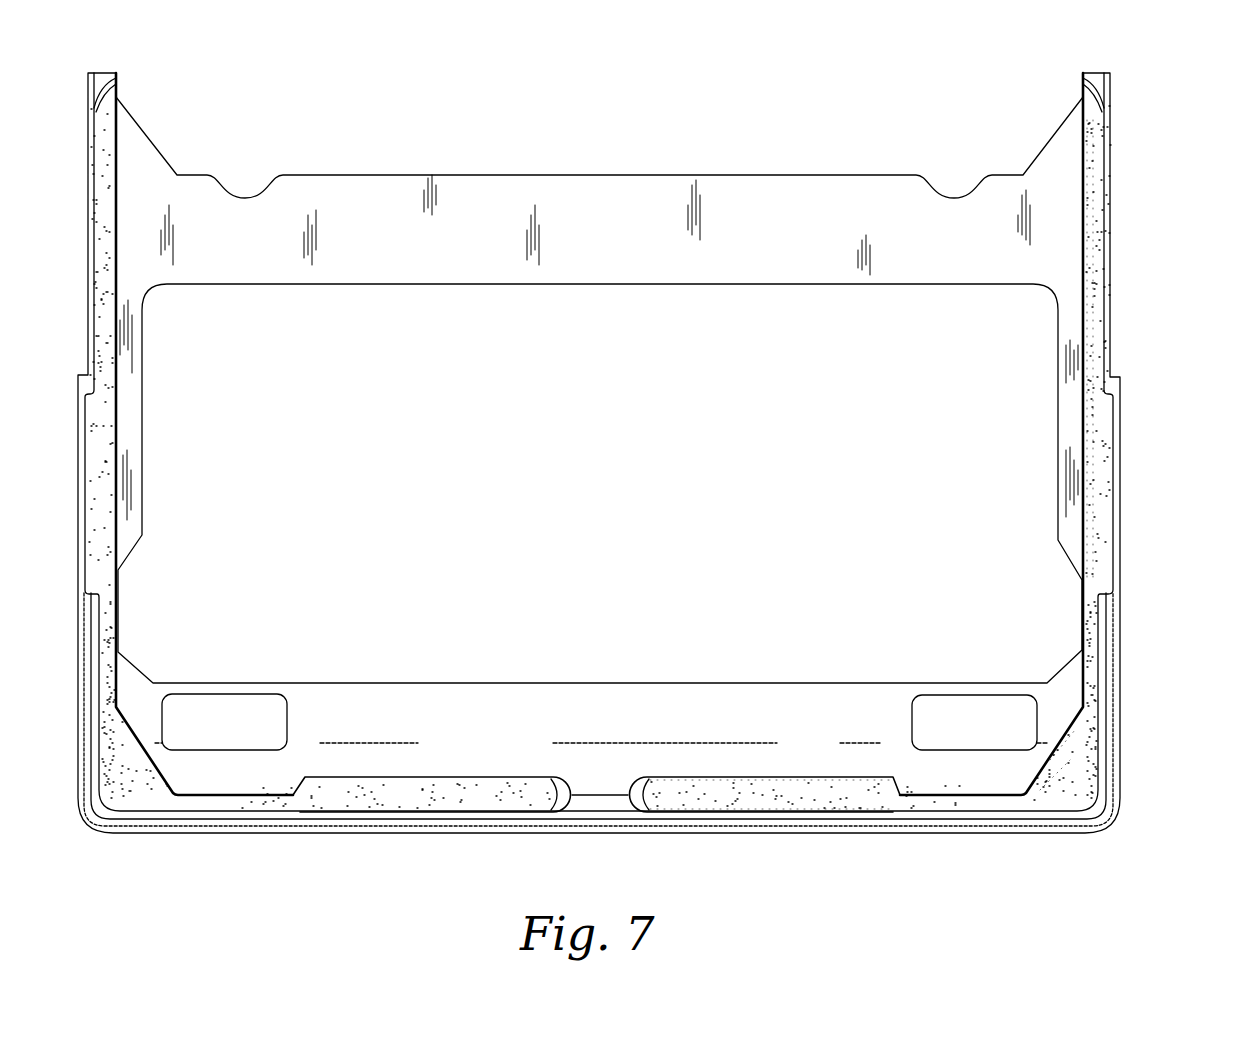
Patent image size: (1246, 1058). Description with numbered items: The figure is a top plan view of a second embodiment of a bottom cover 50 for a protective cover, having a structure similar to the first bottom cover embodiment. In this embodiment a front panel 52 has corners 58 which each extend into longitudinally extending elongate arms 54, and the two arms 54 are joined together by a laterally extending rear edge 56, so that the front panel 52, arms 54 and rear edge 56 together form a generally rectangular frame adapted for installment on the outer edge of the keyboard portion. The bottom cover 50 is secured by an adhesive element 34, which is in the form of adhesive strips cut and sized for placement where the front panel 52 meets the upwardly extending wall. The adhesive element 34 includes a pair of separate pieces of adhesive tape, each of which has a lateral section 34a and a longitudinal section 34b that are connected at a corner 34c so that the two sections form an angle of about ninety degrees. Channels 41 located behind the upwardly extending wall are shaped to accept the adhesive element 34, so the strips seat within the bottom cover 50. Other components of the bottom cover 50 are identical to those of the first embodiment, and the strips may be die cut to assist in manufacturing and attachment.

The bottom cover 50 is at (636, 84).
The elongate arms 54 is at (94, 308).
The rear edge 56 is at (480, 268).
The front panel 52 is at (455, 748).
The channels 41 is at (630, 786).
The adhesive element 34 is at (622, 800).
The lateral section 34a is at (793, 795).
The longitudinal section 34b is at (1100, 549).
The corner 34c is at (1083, 772).
The corners 58 is at (97, 808).